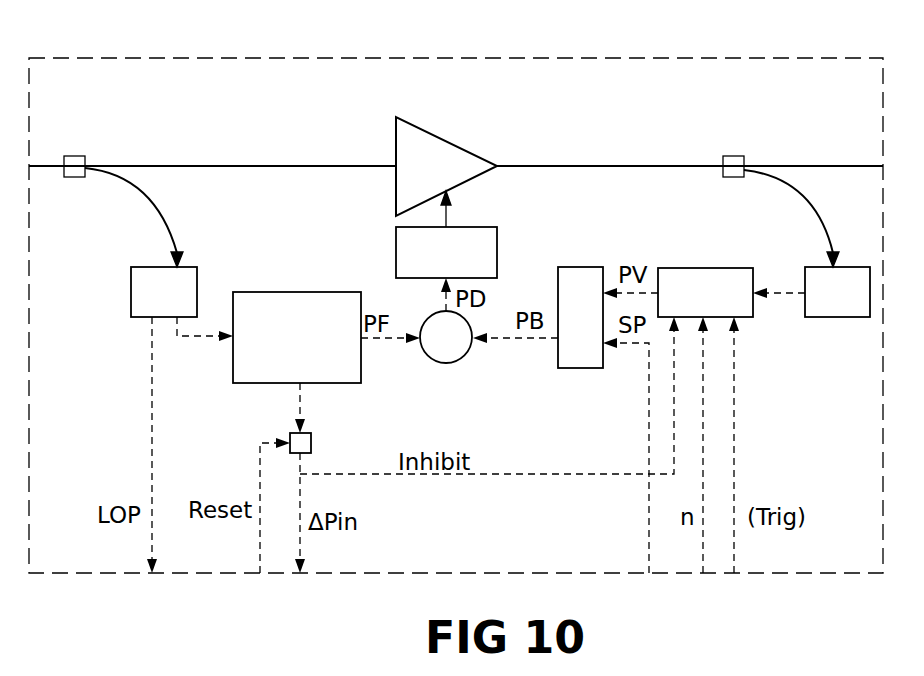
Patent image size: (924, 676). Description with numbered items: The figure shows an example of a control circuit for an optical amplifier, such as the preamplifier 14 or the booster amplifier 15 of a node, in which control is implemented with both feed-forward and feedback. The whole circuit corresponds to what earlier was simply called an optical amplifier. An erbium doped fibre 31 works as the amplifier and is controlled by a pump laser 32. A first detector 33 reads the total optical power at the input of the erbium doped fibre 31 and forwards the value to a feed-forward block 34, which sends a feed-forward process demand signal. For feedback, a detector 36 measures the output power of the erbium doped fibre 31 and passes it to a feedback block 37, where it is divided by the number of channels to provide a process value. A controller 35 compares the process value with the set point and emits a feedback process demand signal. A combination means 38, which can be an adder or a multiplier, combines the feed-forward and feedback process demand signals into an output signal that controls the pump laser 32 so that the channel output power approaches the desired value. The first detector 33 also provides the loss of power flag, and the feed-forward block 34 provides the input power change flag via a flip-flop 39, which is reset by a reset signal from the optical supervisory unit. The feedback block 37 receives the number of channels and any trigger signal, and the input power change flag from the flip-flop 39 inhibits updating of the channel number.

The preamplifier 14 is at (607, 58).
The booster amplifier 15 is at (456, 315).
The erbium doped fibre 31 is at (446, 140).
The pump laser 32 is at (396, 245).
The first detector 33 is at (197, 267).
The feed-forward block 34 is at (263, 292).
The controller 35 is at (588, 267).
The detector 36 is at (850, 267).
The feedback block 37 is at (727, 268).
The combination means 38 is at (451, 363).
The flip-flop 39 is at (311, 443).